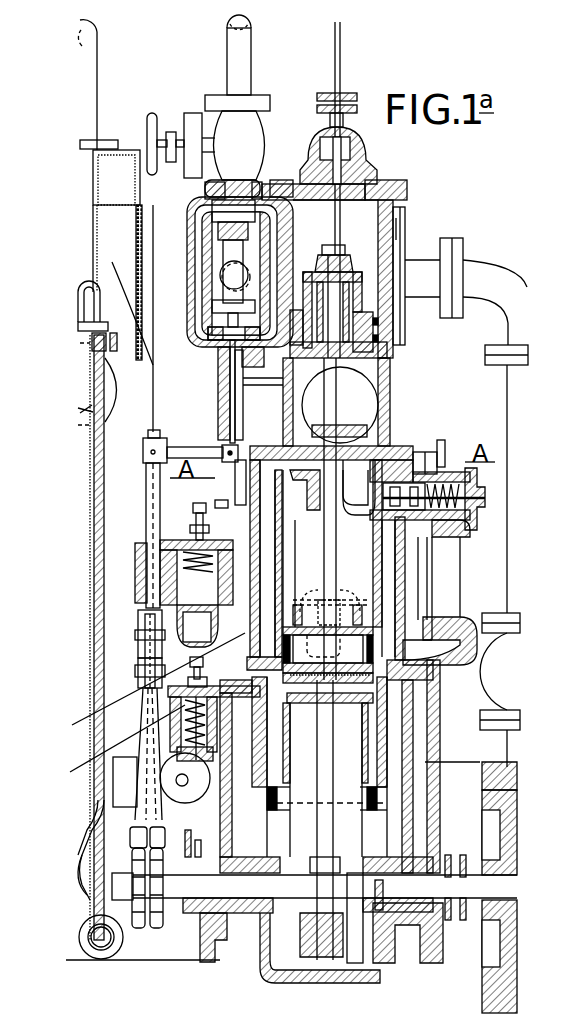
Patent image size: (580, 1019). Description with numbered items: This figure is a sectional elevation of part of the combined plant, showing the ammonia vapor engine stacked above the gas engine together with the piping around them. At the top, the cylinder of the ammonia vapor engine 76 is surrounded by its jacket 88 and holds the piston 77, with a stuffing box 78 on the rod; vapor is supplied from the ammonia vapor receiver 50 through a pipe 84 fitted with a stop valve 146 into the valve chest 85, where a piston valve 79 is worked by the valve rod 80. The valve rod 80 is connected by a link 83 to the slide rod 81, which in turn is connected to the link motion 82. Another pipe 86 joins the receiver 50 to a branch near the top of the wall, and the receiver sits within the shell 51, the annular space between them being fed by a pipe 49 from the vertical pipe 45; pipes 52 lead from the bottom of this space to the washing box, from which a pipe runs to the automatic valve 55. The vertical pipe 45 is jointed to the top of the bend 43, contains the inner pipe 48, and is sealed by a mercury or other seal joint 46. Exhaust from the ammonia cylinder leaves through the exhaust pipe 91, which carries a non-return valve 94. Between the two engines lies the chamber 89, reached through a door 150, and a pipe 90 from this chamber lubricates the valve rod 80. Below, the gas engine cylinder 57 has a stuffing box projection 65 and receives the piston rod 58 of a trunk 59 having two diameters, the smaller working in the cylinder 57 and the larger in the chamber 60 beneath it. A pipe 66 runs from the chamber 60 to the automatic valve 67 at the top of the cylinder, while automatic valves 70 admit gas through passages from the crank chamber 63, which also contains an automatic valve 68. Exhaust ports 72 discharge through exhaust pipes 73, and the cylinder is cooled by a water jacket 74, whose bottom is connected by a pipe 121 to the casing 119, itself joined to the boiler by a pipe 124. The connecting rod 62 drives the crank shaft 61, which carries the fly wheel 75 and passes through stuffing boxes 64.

The pipe 86 is at (97, 95).
The ammonia vapor receiver 50 is at (140, 262).
The pipe 48 is at (104, 512).
The mercury or other seal joint 46 is at (108, 352).
The pipe 49 is at (109, 390).
The shell 51 is at (154, 350).
The pipe 124 is at (100, 796).
The bend 43 is at (76, 893).
The pipes 52 is at (88, 940).
The pipe 84 is at (227, 70).
The stop valve 146 is at (206, 155).
The stuffing box 78 is at (378, 324).
The piston 77 is at (382, 341).
The cylinder of the ammonia vapor engine 76 is at (380, 250).
The jacket 88 is at (400, 230).
The valve chest 85 is at (195, 280).
The piston valve 79 is at (234, 270).
The exhaust pipe 91 is at (500, 750).
The valve rod 80 is at (228, 365).
The pipe 90 is at (259, 395).
The chamber 89 is at (390, 384).
The door 150 is at (340, 519).
The gas engine cylinder 57 is at (375, 570).
The piston rod 58 is at (326, 540).
The stuffing box projection 65 is at (349, 510).
The pipe 66 is at (431, 556).
The automatic valve 67 is at (455, 515).
The automatic valves 70 is at (214, 525).
The vertical pipe 45 is at (143, 475).
The link 83 is at (200, 446).
The slide rod 81 is at (146, 533).
The automatic valve 55 is at (180, 548).
The water jacket 74 is at (460, 602).
The exhaust ports 72 is at (337, 600).
The non-return valve 94 is at (501, 671).
The link motion 82 is at (140, 648).
The exhaust pipes 73 is at (157, 702).
The automatic valve 68 is at (214, 709).
The pipe 121 is at (184, 786).
The chamber 60 is at (276, 772).
The trunk 59 is at (368, 785).
The casing 119 is at (478, 778).
The fly wheel 75 is at (482, 990).
The connecting rod 62 is at (318, 840).
The crank chamber 63 is at (326, 851).
The stuffing boxes 64 is at (205, 858).
The crank shaft 61 is at (314, 928).